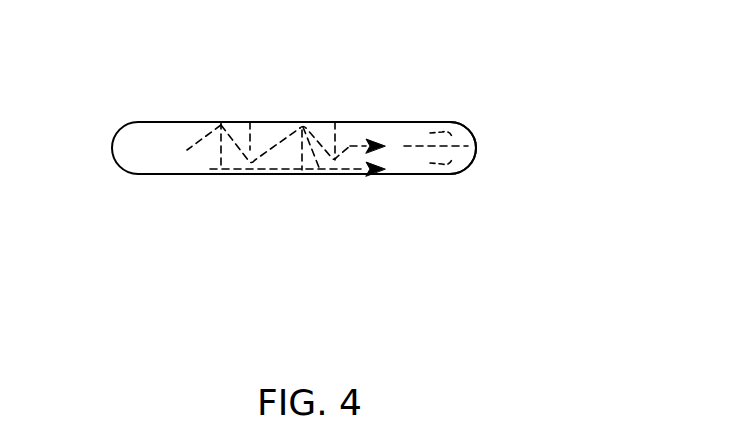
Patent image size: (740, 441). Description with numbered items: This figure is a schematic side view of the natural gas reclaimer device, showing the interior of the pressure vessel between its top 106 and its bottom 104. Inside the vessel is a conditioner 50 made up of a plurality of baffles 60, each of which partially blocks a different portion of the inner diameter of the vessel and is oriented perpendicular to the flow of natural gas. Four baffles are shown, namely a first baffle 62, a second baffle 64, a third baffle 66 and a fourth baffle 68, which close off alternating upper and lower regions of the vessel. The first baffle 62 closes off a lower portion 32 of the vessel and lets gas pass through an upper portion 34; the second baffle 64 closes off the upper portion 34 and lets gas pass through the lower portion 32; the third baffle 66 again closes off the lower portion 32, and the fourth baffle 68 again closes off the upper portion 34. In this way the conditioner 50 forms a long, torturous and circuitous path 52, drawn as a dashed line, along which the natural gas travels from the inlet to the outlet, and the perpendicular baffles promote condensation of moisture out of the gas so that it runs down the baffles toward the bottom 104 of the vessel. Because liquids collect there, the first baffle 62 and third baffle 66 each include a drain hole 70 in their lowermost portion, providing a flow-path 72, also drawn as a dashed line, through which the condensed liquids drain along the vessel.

The lower portion 32 is at (458, 172).
The upper portion 34 is at (458, 126).
The conditioner 50 is at (357, 85).
The torturous circuitous path 52 is at (221, 122).
The plurality of baffles 60 is at (260, 227).
The first baffle 62 is at (221, 125).
The second baffle 64 is at (258, 121).
The third baffle 66 is at (320, 170).
The fourth baffle 68 is at (348, 121).
The drain hole 70 is at (302, 173).
The flow-path 72 is at (352, 173).
The bottom 104 is at (162, 175).
The top 106 is at (170, 121).